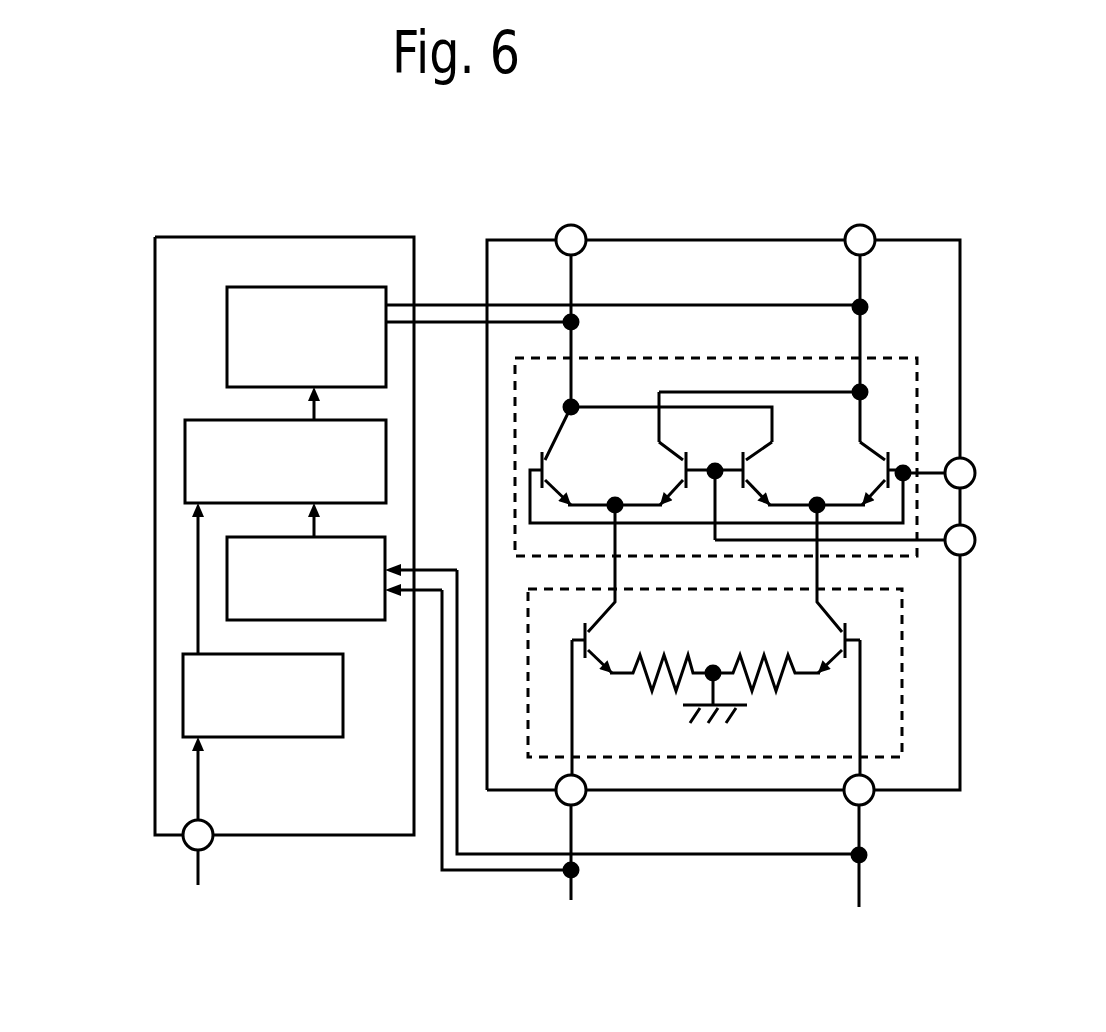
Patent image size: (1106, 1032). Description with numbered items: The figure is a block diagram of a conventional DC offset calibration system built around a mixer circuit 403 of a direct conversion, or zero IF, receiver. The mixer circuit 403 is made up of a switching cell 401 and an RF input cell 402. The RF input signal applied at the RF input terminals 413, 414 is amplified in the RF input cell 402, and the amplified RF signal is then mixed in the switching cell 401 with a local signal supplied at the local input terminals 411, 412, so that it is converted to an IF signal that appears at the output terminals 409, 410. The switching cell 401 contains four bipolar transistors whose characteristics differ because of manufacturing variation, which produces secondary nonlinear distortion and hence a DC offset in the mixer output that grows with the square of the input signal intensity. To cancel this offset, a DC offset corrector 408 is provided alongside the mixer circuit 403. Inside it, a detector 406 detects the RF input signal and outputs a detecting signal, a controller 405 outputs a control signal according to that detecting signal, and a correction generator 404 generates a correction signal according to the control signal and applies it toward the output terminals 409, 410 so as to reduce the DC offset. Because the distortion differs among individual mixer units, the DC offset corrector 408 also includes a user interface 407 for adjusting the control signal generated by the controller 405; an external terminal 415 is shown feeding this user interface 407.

The switching cell 401 is at (917, 407).
The RF input cell 402 is at (903, 673).
The mixer circuit 403 is at (960, 755).
The correction generator 404 is at (227, 337).
The controller 405 is at (185, 450).
The detector 406 is at (227, 570).
The user interface 407 is at (183, 687).
The DC offset corrector 408 is at (253, 835).
The output terminal 409 is at (568, 294).
The output terminal 410 is at (856, 312).
The local input terminal 411 is at (958, 473).
The local input terminal 412 is at (865, 540).
The RF input terminal 413 is at (586, 770).
The RF input terminal 414 is at (879, 773).
The user input terminal 415 is at (164, 852).